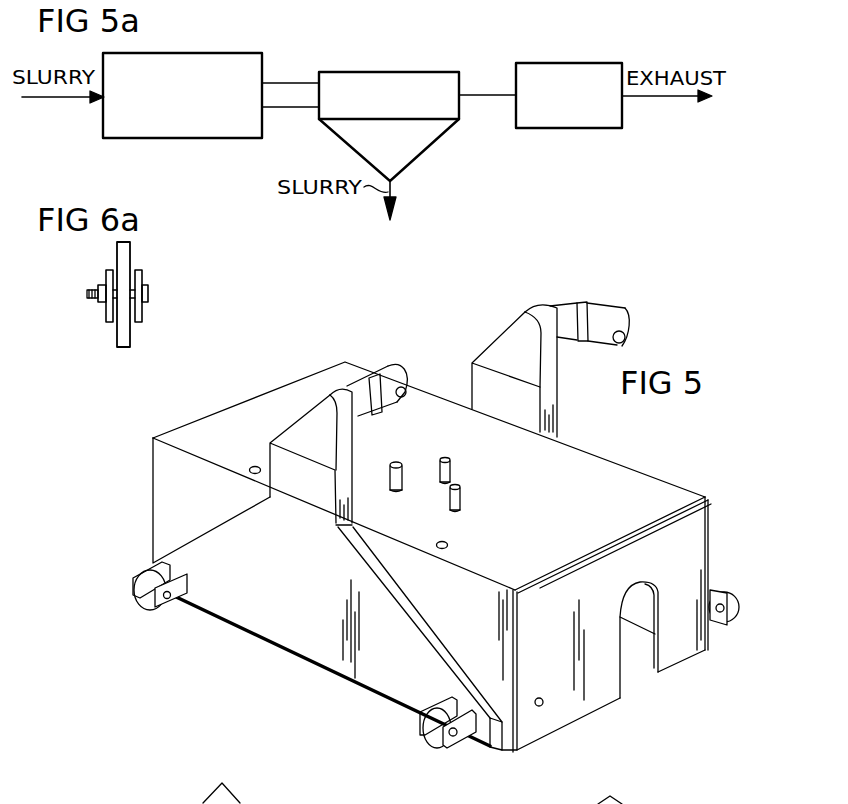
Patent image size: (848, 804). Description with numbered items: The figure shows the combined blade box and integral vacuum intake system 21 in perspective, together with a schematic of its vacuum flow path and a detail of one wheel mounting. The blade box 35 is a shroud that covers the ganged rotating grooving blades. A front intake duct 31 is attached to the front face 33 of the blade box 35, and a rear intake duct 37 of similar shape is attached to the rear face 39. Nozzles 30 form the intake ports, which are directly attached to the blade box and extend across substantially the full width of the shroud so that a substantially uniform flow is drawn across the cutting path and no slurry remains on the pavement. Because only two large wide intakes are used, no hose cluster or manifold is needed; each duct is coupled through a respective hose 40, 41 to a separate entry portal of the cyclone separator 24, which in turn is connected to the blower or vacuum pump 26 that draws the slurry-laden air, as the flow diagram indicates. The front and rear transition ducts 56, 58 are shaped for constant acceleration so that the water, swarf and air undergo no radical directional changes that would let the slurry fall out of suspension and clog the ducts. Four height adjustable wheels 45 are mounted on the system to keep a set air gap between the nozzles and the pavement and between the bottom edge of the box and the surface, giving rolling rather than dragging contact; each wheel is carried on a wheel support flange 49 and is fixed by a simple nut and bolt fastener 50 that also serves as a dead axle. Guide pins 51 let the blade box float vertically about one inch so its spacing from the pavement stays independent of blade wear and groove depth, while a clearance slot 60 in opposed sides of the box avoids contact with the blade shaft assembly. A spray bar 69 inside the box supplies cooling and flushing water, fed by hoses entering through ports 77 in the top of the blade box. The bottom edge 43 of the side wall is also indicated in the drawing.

In FIG. 5A, the combined blade box and integral vacuum intake system 21 is at (238, 53).
In FIG. 5, the combined blade box and integral vacuum intake system 21 is at (414, 531).
In FIG. 5A, the hose 40 is at (300, 83).
In FIG. 5, the hose 40 is at (612, 318).
In FIG. 5A, the hose 41 is at (300, 107).
In FIG. 5, the hose 41 is at (388, 378).
In FIG. 5A, the cyclone separator 24 is at (420, 152).
In FIG. 5A, the blower or vacuum pump 26 is at (588, 63).
In FIG. 6A, the wheel support flange 49 is at (106, 280).
In FIG. 5, the wheel support flange 49 is at (176, 603).
In FIG. 6A, the nut and bolt fastener 50 is at (148, 295).
In FIG. 6A, the height adjustable wheel 45 is at (117, 338).
In FIG. 5, the height adjustable wheel 45 is at (135, 600).
In FIG. 5, the front transition duct 56 is at (500, 352).
In FIG. 5, the rear transition duct 58 is at (301, 434).
In FIG. 5, the port 77 is at (254, 467).
In FIG. 5, the guide pin 51 is at (442, 458).
In FIG. 5, the front intake duct 31 is at (566, 442).
In FIG. 5, the blade box 35 is at (660, 497).
In FIG. 5, the front face 33 is at (711, 556).
In FIG. 5, the rear face 39 is at (153, 532).
In FIG. 5, the rear intake duct 37 is at (277, 620).
In FIG. 5, the nozzle 30 is at (330, 673).
In FIG. 5, the clearance slot 60 is at (637, 653).
In FIG. 5, the bottom edge 43 is at (604, 704).
In FIG. 5, the spray bar 69 is at (543, 708).